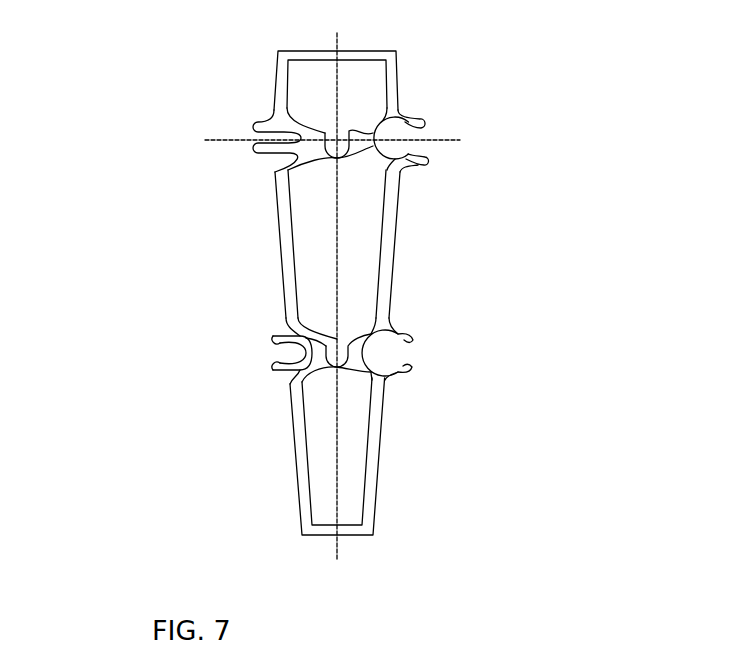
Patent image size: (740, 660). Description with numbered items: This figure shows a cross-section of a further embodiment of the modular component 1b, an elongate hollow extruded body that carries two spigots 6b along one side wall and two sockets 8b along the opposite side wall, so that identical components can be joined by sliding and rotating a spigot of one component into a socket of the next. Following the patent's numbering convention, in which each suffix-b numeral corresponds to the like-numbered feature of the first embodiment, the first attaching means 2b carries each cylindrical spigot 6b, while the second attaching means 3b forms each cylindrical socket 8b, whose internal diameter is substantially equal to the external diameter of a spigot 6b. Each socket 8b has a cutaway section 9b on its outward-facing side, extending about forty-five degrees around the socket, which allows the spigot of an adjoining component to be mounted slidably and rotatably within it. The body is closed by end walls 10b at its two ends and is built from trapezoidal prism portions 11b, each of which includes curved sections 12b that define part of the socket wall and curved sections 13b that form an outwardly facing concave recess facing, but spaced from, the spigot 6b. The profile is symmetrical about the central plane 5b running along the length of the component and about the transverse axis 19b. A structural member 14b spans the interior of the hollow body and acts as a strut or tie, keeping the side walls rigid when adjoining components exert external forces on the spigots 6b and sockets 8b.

The modular component 1b is at (418, 90).
The lower connecting wall 2b is at (262, 155).
The upper hook 3b is at (427, 120).
The hollow cavity 5b is at (340, 92).
The spigot 6b is at (252, 124).
The socket 8b is at (410, 150).
The receiving opening 9b is at (430, 137).
The longitudinal axis 10b is at (356, 50).
The head portion 11b is at (277, 68).
The connecting web 12b is at (377, 157).
The upper connecting wall 13b is at (277, 110).
The structural member 14b is at (352, 160).
The transverse axis 19b is at (257, 140).